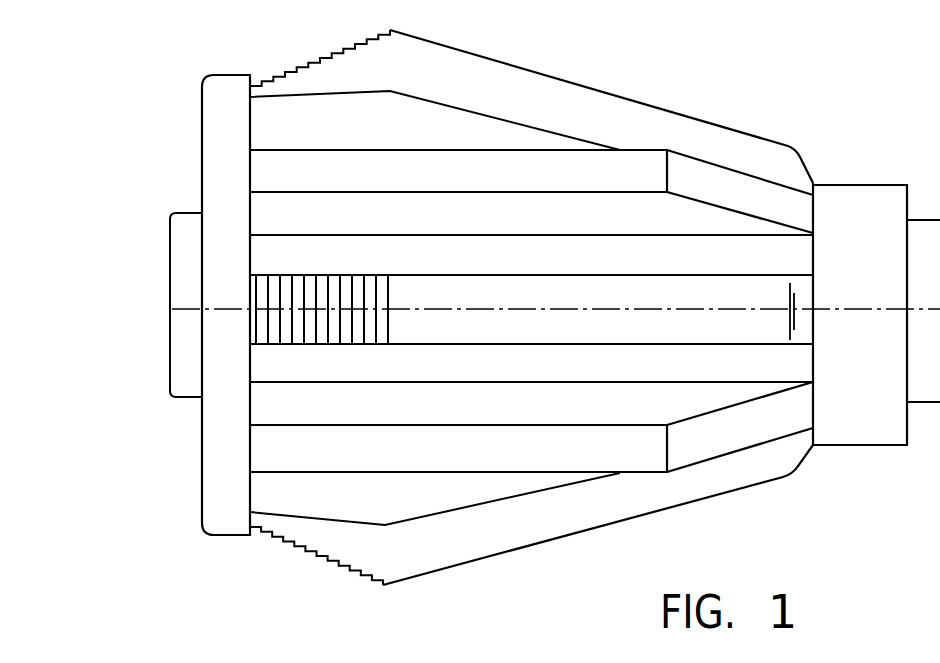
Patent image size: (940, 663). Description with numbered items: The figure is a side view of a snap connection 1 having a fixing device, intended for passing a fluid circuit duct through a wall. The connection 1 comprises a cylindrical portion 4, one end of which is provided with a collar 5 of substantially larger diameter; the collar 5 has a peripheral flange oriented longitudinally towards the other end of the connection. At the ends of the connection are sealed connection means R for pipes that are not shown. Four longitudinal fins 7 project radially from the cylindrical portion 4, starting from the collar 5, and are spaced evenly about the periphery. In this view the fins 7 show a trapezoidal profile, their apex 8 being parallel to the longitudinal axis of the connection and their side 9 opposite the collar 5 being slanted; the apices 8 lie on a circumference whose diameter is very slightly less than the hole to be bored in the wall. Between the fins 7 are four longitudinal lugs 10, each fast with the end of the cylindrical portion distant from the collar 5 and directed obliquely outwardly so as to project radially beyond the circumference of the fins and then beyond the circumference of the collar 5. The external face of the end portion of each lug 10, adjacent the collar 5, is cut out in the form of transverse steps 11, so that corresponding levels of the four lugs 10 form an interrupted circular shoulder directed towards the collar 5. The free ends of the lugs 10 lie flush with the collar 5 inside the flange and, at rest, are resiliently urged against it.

The connection 1 is at (697, 85).
The cylindrical portion 4 is at (837, 210).
The collar 5 is at (217, 180).
The longitudinal fins 7 is at (520, 215).
The apex 8 is at (367, 170).
The side 9 is at (743, 200).
The longitudinal lugs 10 is at (542, 95).
The transverse steps 11 is at (297, 68).
The sealed connection means R is at (177, 287).